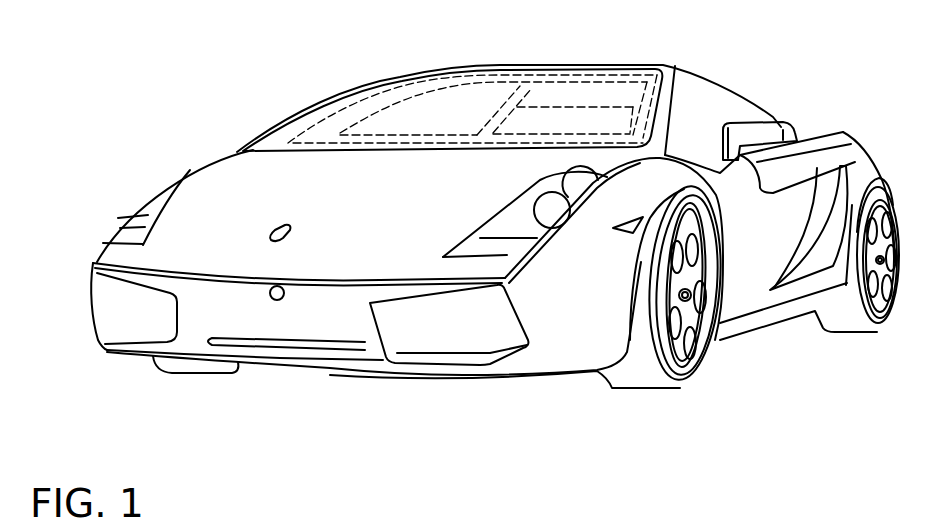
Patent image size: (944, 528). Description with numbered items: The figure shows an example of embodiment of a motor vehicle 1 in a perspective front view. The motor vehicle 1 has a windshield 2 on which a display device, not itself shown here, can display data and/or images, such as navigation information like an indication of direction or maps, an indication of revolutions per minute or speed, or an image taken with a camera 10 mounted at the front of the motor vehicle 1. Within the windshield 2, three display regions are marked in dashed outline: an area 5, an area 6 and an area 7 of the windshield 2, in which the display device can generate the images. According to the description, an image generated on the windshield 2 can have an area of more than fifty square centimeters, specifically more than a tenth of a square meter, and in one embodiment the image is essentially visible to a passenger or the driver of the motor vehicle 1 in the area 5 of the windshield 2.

The motor vehicle 1 is at (817, 74).
The windshield 2 is at (288, 143).
The area of the windshield 5 is at (563, 87).
The area of the windshield 6 is at (525, 107).
The area of the windshield 7 is at (433, 90).
The camera 10 is at (278, 300).